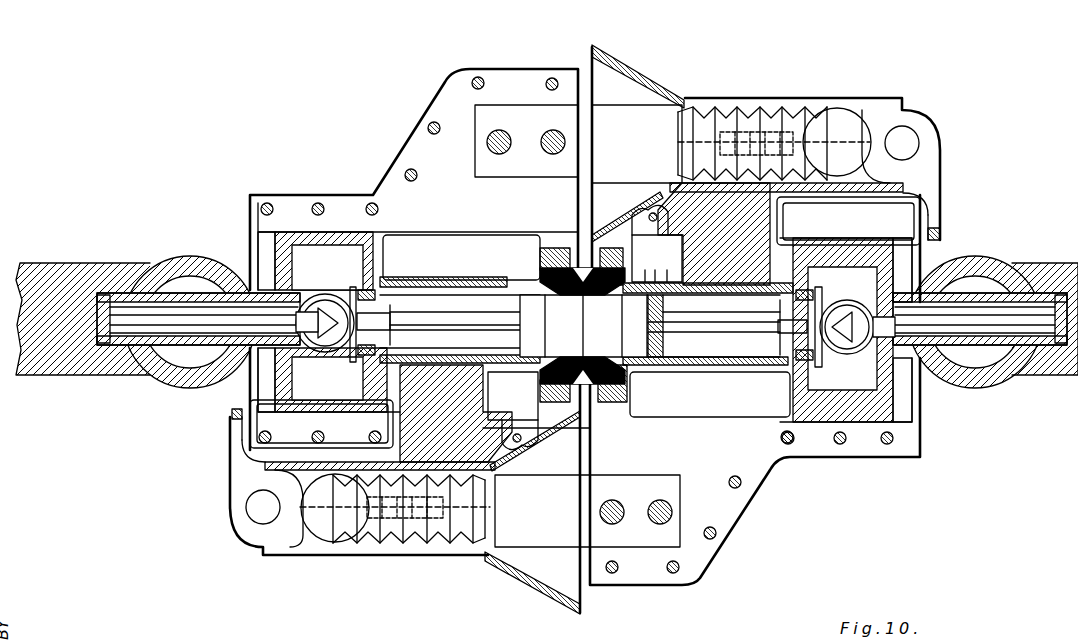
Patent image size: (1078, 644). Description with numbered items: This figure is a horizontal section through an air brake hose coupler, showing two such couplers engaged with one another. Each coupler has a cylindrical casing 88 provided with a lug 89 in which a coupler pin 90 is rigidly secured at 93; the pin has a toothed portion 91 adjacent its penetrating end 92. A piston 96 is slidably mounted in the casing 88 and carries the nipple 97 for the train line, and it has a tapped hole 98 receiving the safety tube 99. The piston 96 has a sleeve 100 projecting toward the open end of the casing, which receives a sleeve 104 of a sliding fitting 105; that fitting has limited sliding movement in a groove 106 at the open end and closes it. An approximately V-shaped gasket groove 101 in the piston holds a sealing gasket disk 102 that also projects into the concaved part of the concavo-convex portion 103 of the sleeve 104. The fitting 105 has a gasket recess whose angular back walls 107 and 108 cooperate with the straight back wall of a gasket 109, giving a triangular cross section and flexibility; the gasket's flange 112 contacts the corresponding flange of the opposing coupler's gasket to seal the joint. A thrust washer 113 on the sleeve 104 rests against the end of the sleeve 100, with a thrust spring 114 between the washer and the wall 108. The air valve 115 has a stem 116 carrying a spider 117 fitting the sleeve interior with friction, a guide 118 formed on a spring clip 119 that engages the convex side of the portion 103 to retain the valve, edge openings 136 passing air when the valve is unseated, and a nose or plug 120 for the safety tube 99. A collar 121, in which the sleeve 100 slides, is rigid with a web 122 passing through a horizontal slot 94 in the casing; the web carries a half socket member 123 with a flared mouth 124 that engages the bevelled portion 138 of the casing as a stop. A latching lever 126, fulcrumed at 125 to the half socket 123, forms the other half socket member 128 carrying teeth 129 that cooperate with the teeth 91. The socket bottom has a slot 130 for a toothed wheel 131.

The cylindrical casing 88 is at (337, 210).
The lug 89 is at (450, 135).
The coupler pin 90 is at (518, 112).
The toothed portion 91 is at (747, 113).
The penetrating end 92 is at (843, 108).
The securing point 93 is at (551, 152).
The horizontal slot 94 is at (773, 233).
The piston 96 is at (297, 232).
The nipple 97 is at (595, 301).
The tapped hole 98 is at (277, 282).
The safety tube 99 is at (200, 340).
The sleeve 100 is at (580, 274).
The gasket groove 101 is at (586, 326).
The sealing gasket disk 102 is at (580, 375).
The concavo-convex portion 103 is at (586, 324).
The sleeve 104 is at (465, 305).
The sliding fitting 105 is at (560, 250).
The groove 106 is at (545, 250).
The back wall 107 is at (592, 258).
The back wall 108 is at (545, 285).
The gasket 109 is at (646, 394).
The flange 112 is at (584, 326).
The thrust washer 113 is at (586, 325).
The thrust spring 114 is at (629, 308).
The air valve 115 is at (585, 338).
The valve stem 116 is at (585, 337).
The spider 117 is at (606, 326).
The guide 118 is at (585, 324).
The spring clip 119 is at (589, 316).
The nose or plug 120 is at (277, 355).
The collar 121 is at (452, 275).
The web 122 is at (585, 322).
The half socket member 123 is at (908, 192).
The flared mouth 124 is at (650, 82).
The fulcrum 125 is at (912, 142).
The latching lever 126 is at (928, 219).
The half socket member 128 is at (800, 103).
The teeth 129 is at (702, 110).
The slot 130 is at (680, 141).
The toothed wheel 131 is at (680, 168).
The edge openings 136 is at (310, 322).
The bevelled portion 138 is at (612, 235).